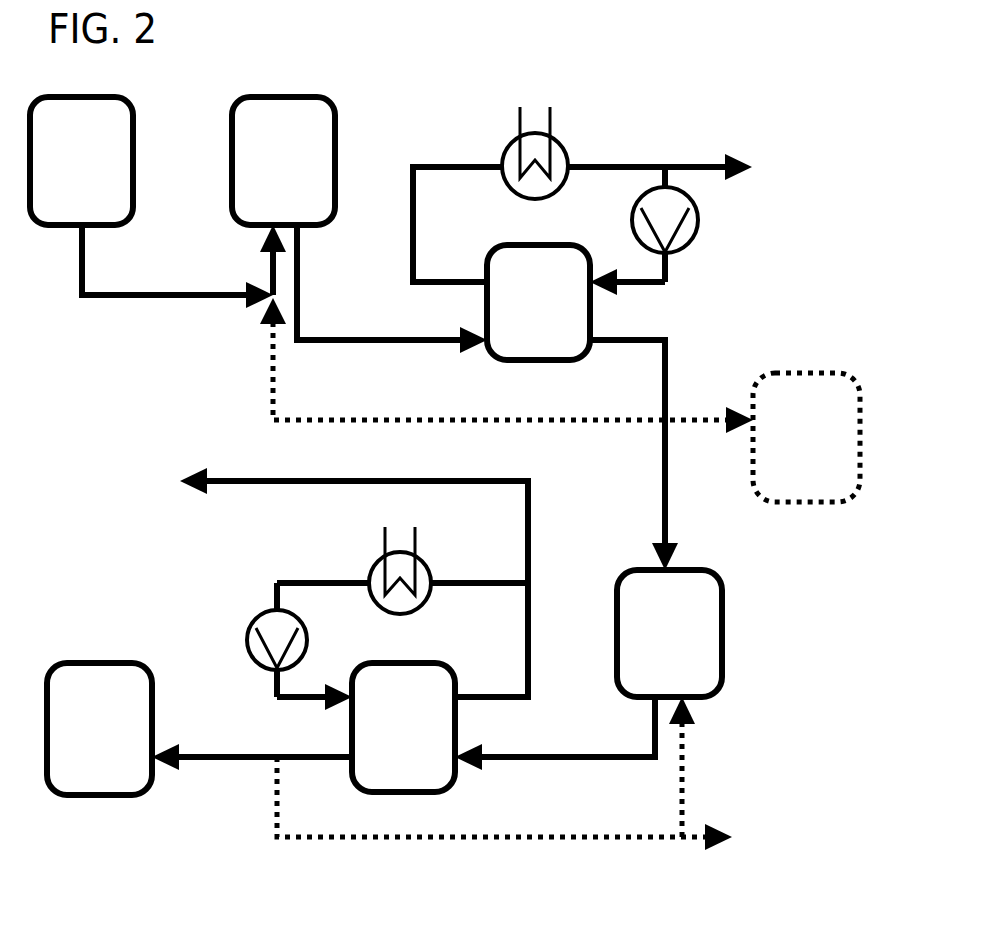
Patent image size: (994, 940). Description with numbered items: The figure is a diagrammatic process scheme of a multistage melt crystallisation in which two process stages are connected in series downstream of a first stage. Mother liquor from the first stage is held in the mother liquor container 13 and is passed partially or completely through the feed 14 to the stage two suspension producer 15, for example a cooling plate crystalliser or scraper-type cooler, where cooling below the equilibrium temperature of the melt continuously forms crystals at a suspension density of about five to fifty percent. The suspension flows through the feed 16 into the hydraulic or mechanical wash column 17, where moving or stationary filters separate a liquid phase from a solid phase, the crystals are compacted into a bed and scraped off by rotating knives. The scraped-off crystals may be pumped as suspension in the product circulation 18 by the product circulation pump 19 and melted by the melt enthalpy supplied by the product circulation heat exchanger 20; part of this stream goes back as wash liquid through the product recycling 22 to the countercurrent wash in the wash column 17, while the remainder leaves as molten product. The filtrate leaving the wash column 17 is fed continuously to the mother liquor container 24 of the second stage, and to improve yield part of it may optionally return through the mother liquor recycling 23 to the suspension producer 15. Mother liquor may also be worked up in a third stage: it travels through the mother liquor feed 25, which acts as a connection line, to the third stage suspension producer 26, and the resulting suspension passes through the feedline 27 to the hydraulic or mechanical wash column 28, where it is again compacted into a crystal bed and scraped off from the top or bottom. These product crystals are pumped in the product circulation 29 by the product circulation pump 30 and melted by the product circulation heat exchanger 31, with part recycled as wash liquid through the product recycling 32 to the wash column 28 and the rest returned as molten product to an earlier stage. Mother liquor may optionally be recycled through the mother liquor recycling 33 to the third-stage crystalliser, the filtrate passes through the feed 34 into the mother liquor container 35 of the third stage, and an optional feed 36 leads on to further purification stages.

The mother liquor container of the first stage 13 is at (81, 161).
The feed 14 is at (205, 300).
The stage 2 suspension producer 15 is at (283, 161).
The feed 16 is at (422, 335).
The hydraulic or mechanical wash column 17 is at (538, 302).
The product circulation of the second stage 18 is at (435, 165).
The product circulation pump 19 is at (693, 232).
The product circulation heat exchanger 20 is at (563, 152).
The product recycling 22 is at (655, 283).
The mother liquor recycling 23 is at (450, 418).
The mother liquor container of the second stage 24 is at (806, 437).
The mother liquor feed 25 is at (660, 523).
The third stage suspension producer 26 is at (669, 633).
The feedline of the product 27 is at (530, 750).
The hydraulic or mechanical wash column 28 is at (403, 727).
The product circulation of the third stage 29 is at (523, 658).
The product circulation pump 30 is at (240, 648).
The product circulation heat exchanger 31 is at (428, 567).
The product recycling 32 is at (273, 702).
The mother liquor recycling 33 is at (470, 835).
The feed 34 is at (248, 762).
The mother liquor container of the third stage 35 is at (99, 729).
The optional feed to further purification stages 36 is at (707, 827).